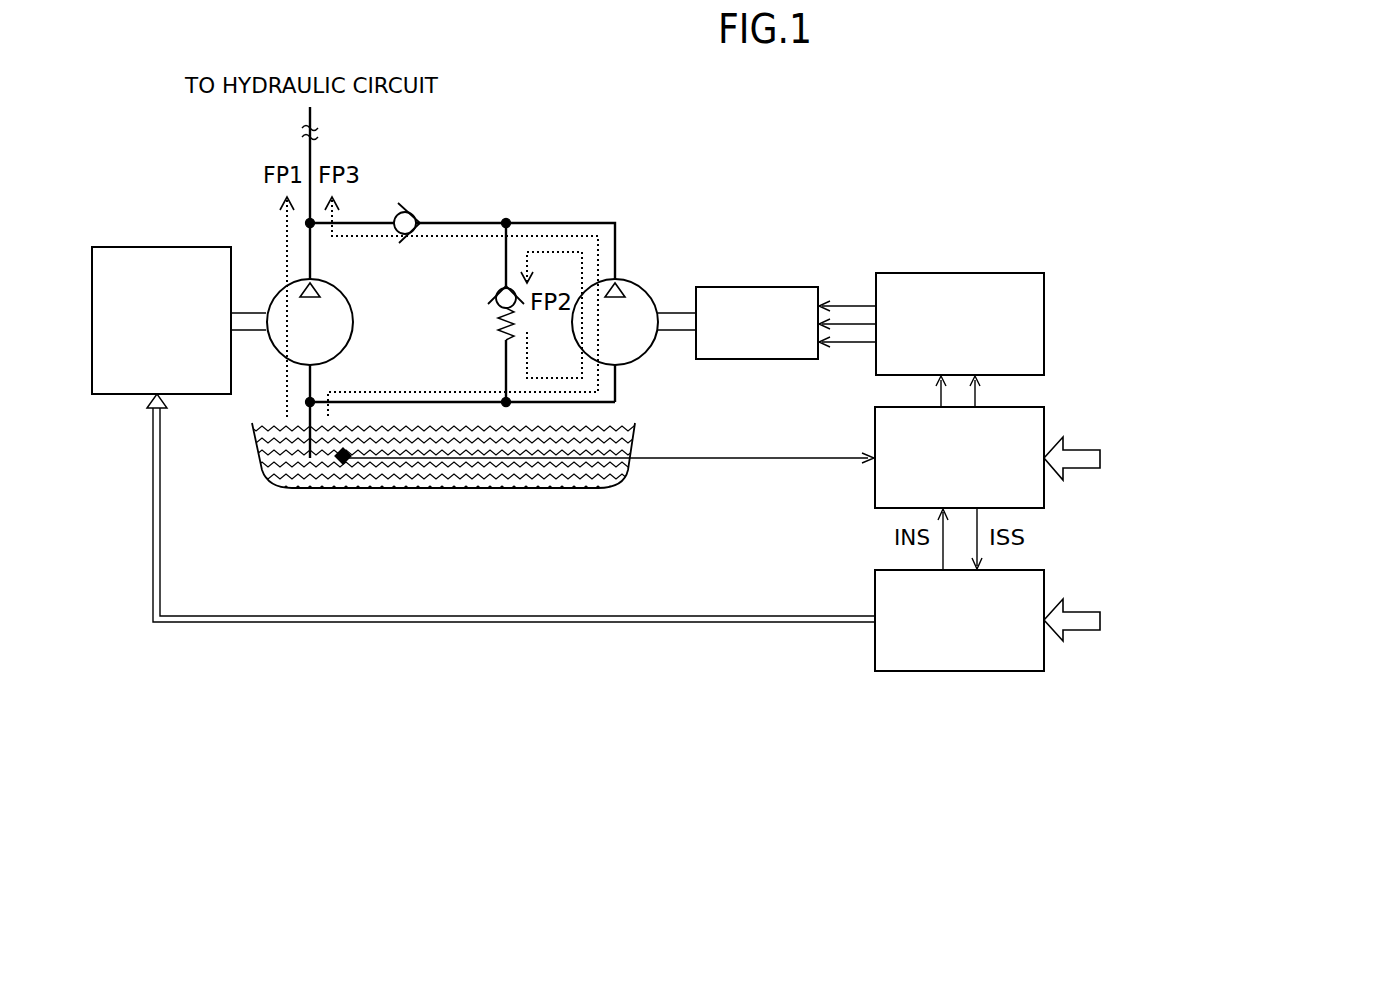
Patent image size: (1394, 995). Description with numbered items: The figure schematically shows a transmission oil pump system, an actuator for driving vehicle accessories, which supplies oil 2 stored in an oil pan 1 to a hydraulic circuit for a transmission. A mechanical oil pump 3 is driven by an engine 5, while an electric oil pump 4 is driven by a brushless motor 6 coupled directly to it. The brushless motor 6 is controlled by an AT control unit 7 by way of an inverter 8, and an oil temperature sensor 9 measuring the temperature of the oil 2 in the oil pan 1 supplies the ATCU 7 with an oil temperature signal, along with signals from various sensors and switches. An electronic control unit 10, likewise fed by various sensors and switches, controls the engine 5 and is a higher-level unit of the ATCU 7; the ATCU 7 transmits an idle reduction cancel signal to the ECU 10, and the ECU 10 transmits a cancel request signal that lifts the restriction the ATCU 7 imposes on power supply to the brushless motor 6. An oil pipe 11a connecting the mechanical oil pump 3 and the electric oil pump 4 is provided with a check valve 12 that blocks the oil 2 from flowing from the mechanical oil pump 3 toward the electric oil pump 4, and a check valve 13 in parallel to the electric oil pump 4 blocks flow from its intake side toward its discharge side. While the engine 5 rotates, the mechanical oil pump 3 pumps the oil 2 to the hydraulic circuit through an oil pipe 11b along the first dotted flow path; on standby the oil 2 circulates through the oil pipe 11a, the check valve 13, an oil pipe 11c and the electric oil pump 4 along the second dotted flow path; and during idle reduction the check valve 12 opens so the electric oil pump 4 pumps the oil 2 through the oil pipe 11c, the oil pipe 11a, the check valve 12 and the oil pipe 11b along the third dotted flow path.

The oil pan 1 is at (253, 435).
The oil 2 is at (637, 428).
The mechanical oil pump 3 is at (355, 319).
The electric oil pump 4 is at (638, 290).
The engine 5 is at (140, 247).
The brushless motor 6 is at (748, 287).
The AT control unit (ATCU) 7 is at (1044, 420).
The inverter 8 is at (1044, 294).
The oil temperature sensor 9 is at (343, 463).
The electronic control unit (ECU) 10 is at (1044, 588).
The oil pipe 11a is at (535, 222).
The oil pipe 11b is at (310, 247).
The oil pipe 11c is at (413, 402).
The check valve 12 is at (413, 211).
The check valve 13 is at (498, 290).